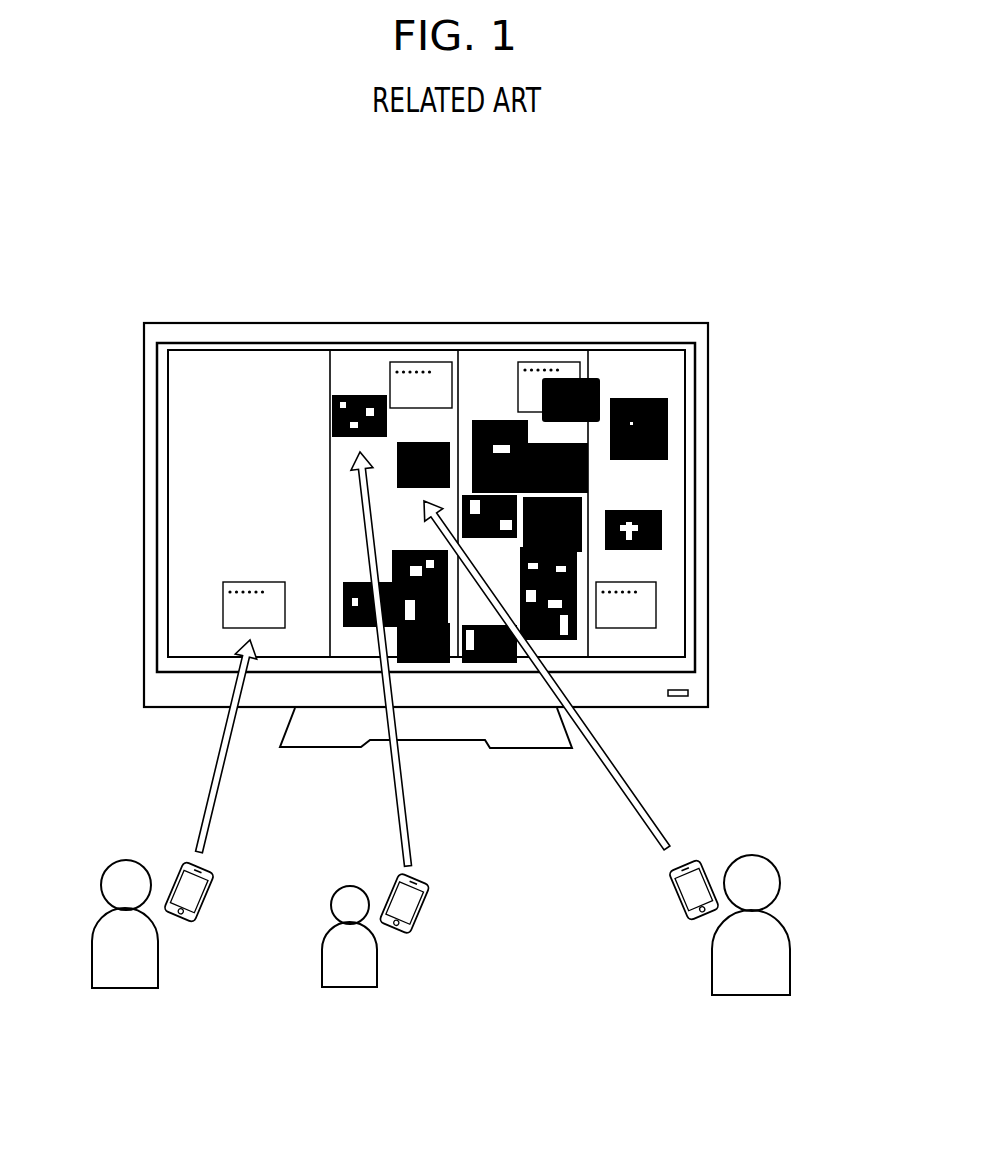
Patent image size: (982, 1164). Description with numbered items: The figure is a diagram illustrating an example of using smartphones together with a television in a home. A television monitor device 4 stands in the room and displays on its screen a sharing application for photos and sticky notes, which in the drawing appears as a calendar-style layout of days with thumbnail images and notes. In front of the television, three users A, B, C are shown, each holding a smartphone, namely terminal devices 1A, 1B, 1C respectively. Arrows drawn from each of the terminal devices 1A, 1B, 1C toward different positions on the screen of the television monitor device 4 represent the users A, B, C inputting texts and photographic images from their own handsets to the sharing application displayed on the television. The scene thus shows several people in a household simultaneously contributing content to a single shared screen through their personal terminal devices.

The television monitor device 4 is at (620, 322).
The terminal device 1A is at (212, 883).
The terminal device 1B is at (428, 898).
The terminal device 1C is at (672, 887).
The user A is at (99, 961).
The user B is at (329, 961).
The user C is at (775, 957).